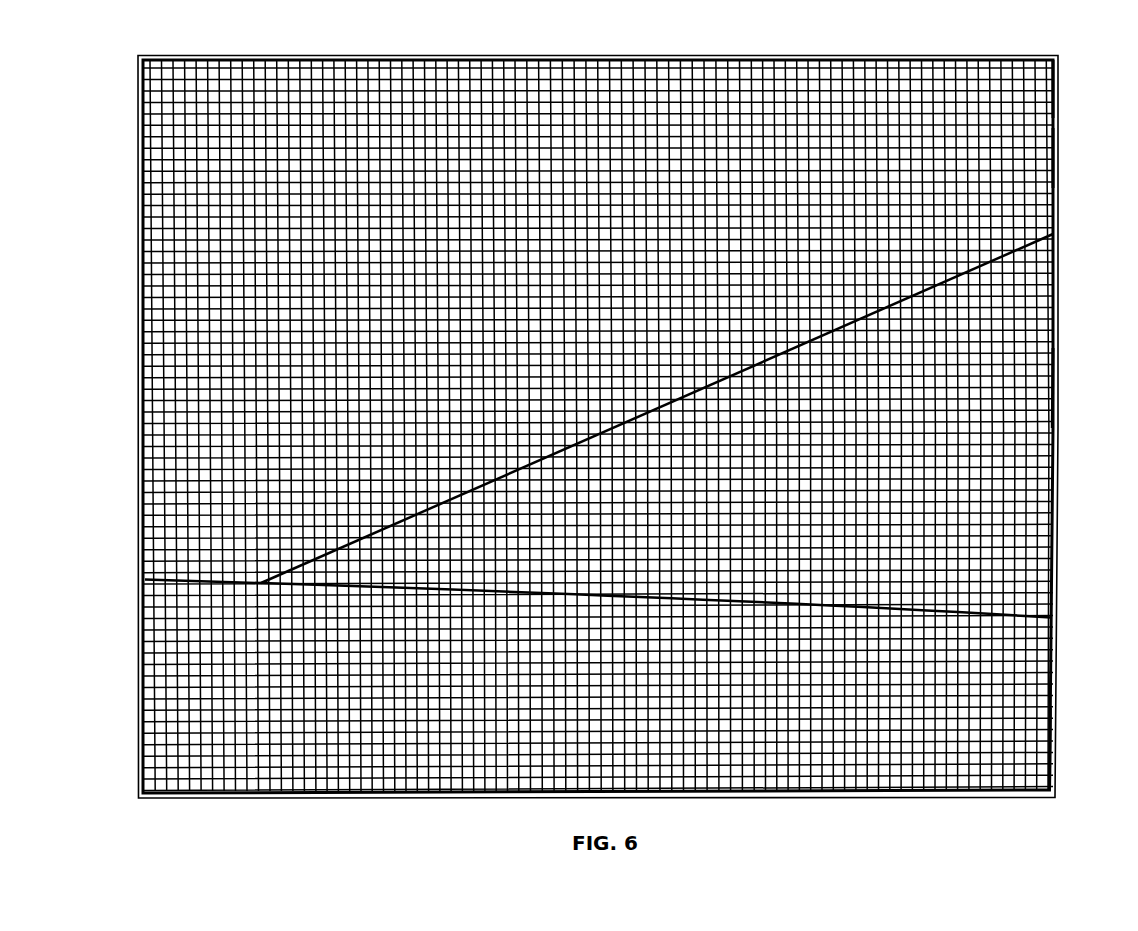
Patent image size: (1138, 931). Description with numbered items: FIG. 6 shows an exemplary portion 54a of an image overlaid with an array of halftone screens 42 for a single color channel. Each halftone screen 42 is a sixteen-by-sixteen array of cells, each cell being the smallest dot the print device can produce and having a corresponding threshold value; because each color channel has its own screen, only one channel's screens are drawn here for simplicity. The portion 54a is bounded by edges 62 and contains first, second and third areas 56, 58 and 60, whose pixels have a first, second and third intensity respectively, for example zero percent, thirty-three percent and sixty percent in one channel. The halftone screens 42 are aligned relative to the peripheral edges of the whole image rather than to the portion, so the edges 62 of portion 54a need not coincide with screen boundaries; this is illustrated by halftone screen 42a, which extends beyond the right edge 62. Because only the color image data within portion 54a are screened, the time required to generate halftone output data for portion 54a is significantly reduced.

The halftone screen 42 is at (143, 305).
The halftone screen 42a is at (1046, 627).
The portion 54a is at (1048, 75).
The first area 56 is at (1033, 145).
The second area 58 is at (1035, 388).
The third area 60 is at (1040, 752).
The edges 62 is at (783, 50).